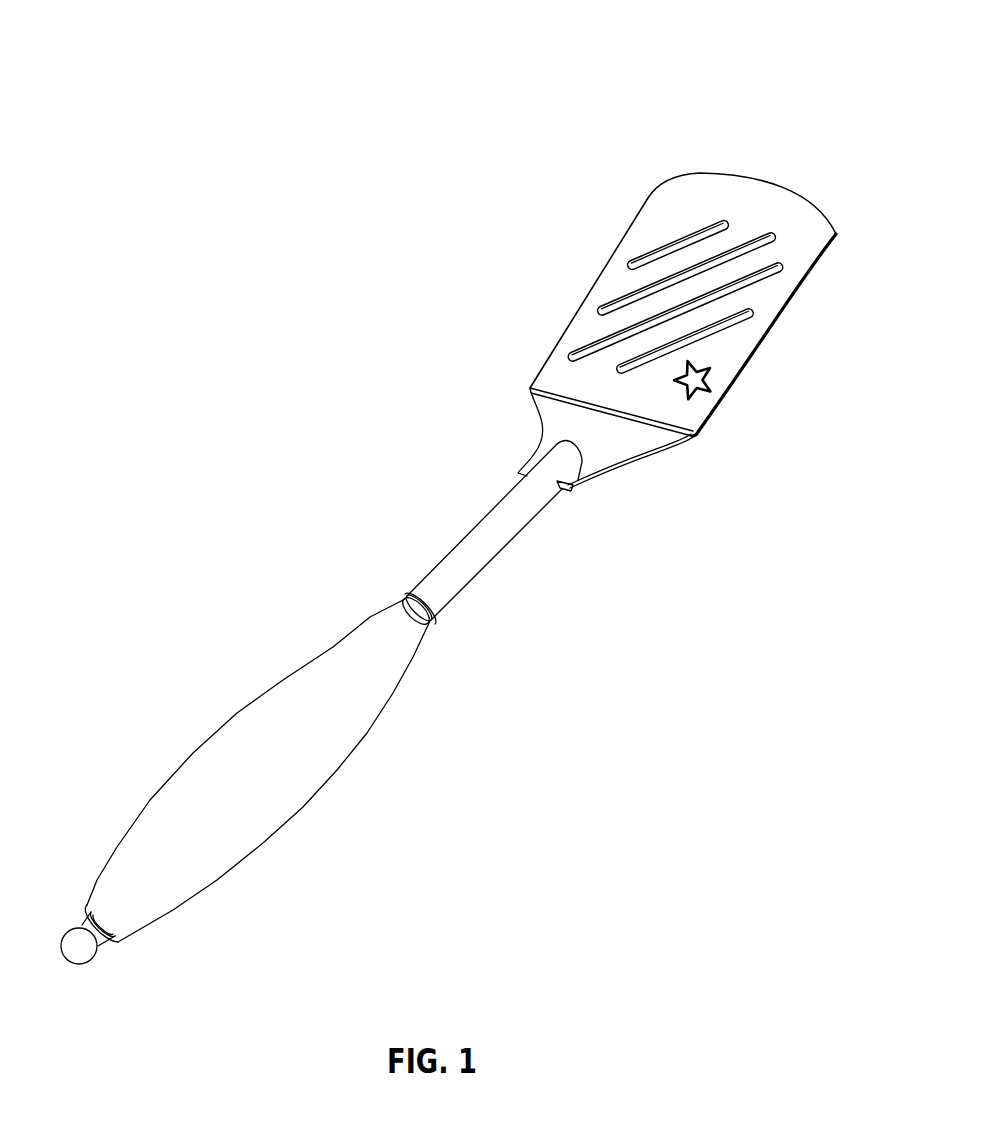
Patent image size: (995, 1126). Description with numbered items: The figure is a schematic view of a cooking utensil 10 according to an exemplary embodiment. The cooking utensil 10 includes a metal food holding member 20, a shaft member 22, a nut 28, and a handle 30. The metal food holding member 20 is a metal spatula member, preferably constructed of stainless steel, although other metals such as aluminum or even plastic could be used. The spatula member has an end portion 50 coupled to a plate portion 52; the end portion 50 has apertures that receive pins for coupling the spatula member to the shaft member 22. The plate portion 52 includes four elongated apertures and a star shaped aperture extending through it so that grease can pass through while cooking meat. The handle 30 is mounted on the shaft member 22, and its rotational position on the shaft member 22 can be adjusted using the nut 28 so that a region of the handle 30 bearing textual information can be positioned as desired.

The cooking utensil 10 is at (732, 62).
The metal food holding member 20 is at (797, 282).
The shaft member 22 is at (493, 538).
The nut 28 is at (433, 620).
The handle 30 is at (287, 813).
The end portion 50 is at (625, 440).
The plate portion 52 is at (755, 353).